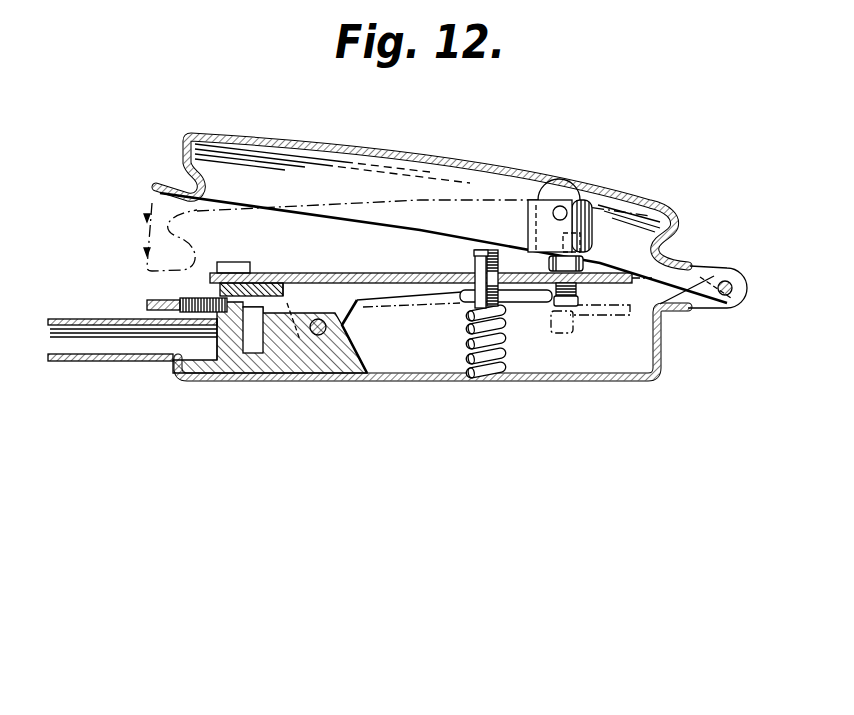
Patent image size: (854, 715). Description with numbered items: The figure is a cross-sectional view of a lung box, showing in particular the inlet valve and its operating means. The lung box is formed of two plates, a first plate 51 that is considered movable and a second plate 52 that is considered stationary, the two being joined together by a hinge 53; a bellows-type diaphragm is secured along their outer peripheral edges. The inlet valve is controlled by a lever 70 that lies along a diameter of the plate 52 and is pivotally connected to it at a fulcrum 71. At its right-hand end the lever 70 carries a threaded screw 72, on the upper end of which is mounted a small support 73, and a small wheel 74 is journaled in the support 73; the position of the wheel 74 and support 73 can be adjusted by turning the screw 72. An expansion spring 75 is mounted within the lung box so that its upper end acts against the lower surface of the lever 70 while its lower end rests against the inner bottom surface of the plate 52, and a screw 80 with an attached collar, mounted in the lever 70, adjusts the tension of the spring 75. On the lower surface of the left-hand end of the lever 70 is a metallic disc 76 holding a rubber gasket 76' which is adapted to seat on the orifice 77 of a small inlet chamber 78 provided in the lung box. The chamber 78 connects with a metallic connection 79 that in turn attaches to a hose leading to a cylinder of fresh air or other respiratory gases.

The plate 51 is at (497, 163).
The plate 52 is at (540, 383).
The hinge 53 is at (727, 300).
The lever 70 is at (340, 273).
The fulcrum 71 is at (343, 327).
The threaded screw 72 is at (566, 318).
The support 73 is at (528, 217).
The wheel 74 is at (545, 188).
The expansion spring 75 is at (467, 337).
The metallic disc 76 is at (215, 292).
The rubber gasket 76' is at (254, 253).
The orifice 77 is at (286, 302).
The inlet chamber 78 is at (225, 347).
The metallic connection 79 is at (98, 363).
The screw 80 is at (476, 262).